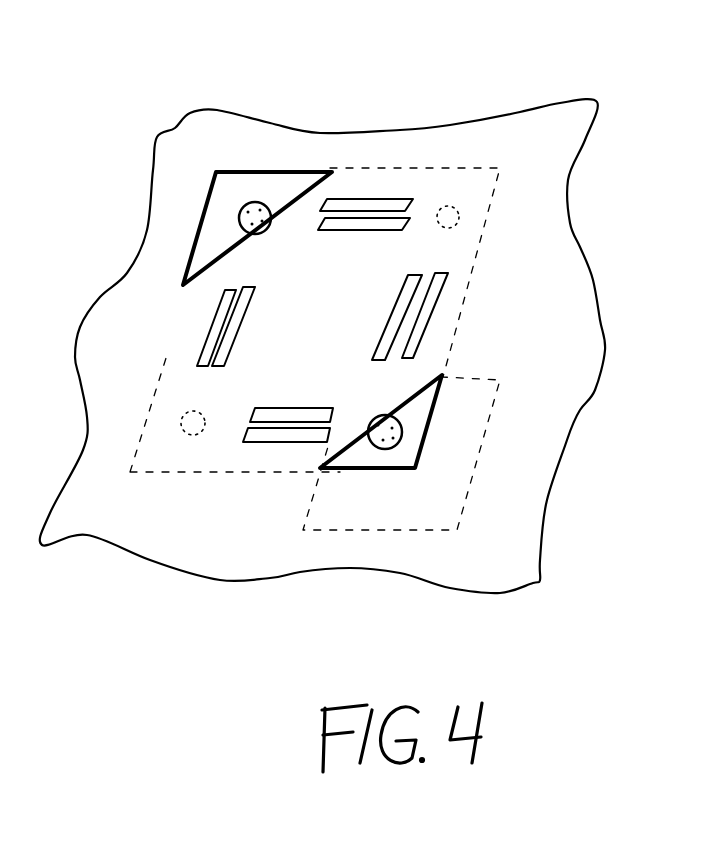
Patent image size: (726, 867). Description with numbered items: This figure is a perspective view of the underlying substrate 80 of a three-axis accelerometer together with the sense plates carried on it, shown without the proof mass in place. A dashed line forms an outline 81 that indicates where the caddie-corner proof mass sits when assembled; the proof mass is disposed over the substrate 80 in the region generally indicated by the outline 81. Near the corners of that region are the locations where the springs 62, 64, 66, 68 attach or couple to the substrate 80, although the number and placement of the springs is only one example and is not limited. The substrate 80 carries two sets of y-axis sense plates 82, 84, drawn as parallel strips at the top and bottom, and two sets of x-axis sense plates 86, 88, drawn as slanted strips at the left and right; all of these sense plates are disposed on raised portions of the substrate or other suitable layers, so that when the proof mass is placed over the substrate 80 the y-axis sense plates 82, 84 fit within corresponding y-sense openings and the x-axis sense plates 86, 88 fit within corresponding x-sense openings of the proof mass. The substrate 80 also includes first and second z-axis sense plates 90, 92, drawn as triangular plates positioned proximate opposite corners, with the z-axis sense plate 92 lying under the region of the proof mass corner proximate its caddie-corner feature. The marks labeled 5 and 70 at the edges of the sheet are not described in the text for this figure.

The adjacent figure label 5 is at (13, 650).
The spring 62 is at (258, 234).
The spring 64 is at (451, 190).
The spring 66 is at (372, 418).
The spring 68 is at (196, 412).
The substrate 70 is at (23, 154).
The underlying substrate 80 is at (583, 243).
The outline 81 is at (405, 168).
The y-axis sense plates 82 is at (370, 225).
The y-axis sense plates 84 is at (263, 408).
The x-axis sense plates 86 is at (392, 322).
The x-axis sense plates 88 is at (212, 338).
The first z-axis sense plate 90 is at (238, 197).
The second z-axis sense plate 92 is at (381, 421).